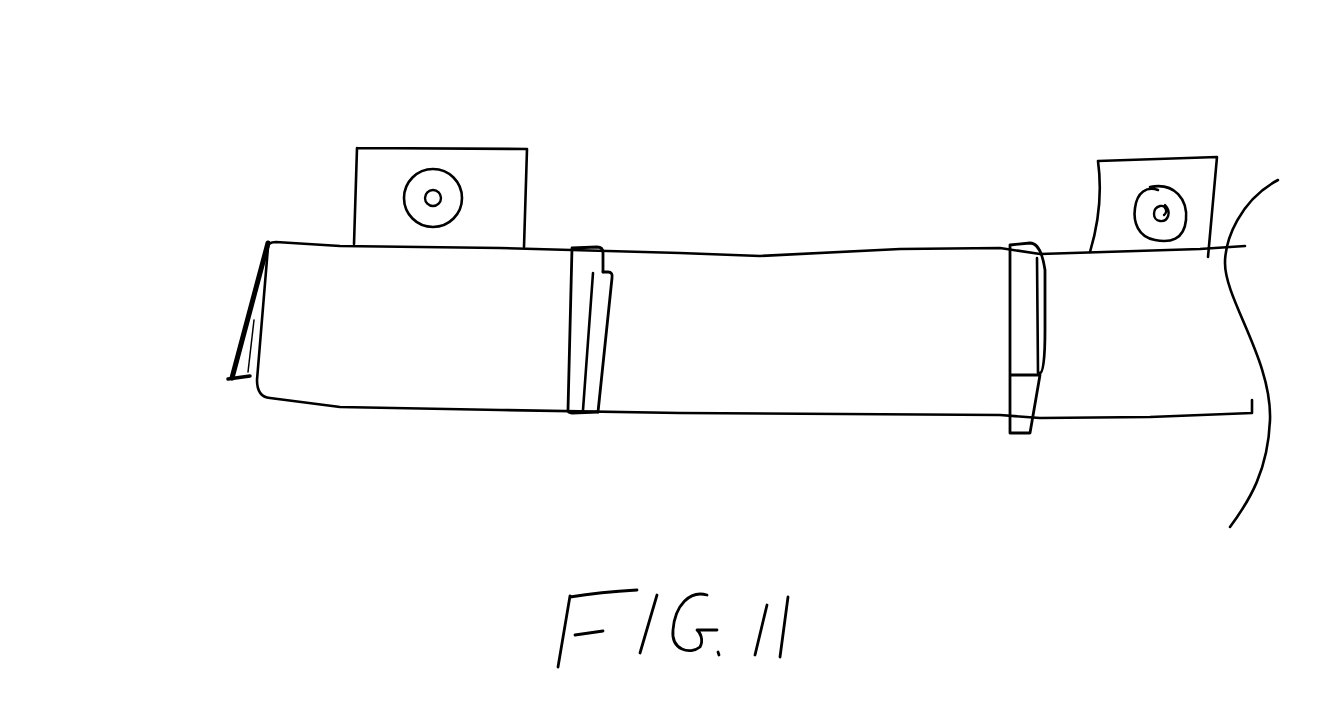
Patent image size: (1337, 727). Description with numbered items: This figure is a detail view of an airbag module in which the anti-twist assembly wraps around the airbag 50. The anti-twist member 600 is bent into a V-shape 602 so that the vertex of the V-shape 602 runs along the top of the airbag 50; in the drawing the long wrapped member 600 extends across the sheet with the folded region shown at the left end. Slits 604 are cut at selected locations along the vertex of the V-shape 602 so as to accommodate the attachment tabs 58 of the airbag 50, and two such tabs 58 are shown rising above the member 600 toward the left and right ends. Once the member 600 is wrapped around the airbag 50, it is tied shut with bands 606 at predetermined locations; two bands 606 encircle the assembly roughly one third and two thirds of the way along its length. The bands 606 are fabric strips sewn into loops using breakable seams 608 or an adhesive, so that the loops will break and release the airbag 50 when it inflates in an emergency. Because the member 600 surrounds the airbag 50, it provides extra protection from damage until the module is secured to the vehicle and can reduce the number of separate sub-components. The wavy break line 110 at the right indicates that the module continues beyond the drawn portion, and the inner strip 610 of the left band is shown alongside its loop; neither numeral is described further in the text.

The airbag 50 is at (240, 330).
The attachment tabs 58 is at (1261, 105).
The break line / cable 110 is at (1014, 0).
The anti-twist member 600 is at (847, 153).
The V-shape 602 is at (244, 282).
The slits 604 is at (604, 147).
The bands 606 is at (530, 472).
The breakable seams 608 is at (1113, 472).
The clip inner strip 610 is at (718, 450).